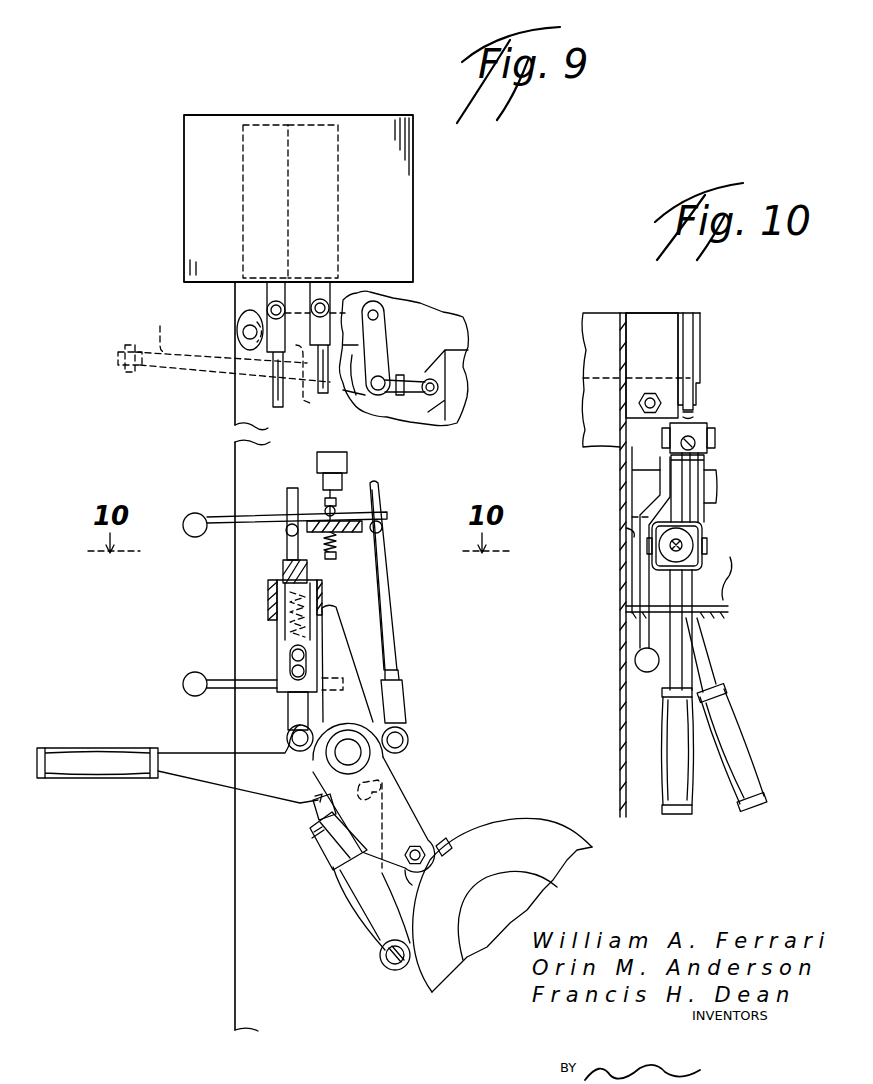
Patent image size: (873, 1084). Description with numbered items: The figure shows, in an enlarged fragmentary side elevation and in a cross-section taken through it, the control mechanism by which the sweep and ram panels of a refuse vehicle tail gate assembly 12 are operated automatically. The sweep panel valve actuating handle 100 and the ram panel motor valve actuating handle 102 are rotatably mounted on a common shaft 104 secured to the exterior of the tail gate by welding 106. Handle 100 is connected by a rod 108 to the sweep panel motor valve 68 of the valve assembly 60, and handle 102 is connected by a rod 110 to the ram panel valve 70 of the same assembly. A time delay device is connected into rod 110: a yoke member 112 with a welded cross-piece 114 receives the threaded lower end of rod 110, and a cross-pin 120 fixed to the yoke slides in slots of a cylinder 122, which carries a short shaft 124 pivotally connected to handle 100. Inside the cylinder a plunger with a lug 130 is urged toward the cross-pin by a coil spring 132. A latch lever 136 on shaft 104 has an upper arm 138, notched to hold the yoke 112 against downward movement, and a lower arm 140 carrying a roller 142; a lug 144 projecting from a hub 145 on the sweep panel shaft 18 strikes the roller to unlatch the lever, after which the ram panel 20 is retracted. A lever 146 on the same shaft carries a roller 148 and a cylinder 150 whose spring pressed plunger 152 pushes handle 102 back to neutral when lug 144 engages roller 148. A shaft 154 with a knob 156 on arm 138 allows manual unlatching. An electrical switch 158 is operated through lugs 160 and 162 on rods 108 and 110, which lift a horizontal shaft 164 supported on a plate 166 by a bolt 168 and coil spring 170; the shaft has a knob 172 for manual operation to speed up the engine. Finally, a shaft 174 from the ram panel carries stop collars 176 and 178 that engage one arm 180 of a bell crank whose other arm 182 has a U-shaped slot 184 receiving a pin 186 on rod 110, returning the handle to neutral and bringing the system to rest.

In FIG. 9, the tail gate assembly 12 is at (226, 922).
In FIG. 10, the tail gate assembly 12 is at (612, 685).
In FIG. 9, the sweep panel shaft 18 is at (545, 885).
In FIG. 10, the sweep panel shaft 18 is at (700, 335).
In FIG. 9, the ram panel 20 is at (470, 357).
In FIG. 9, the valve assembly 60 is at (424, 217).
In FIG. 9, the sweep panel motor valve 68 is at (243, 168).
In FIG. 9, the ram panel valve 70 is at (338, 175).
In FIG. 9, the sweep panel valve actuating handle 100 is at (287, 745).
In FIG. 10, the sweep panel valve actuating handle 100 is at (660, 728).
In FIG. 9, the ram panel motor valve actuating handle 102 is at (112, 782).
In FIG. 10, the ram panel motor valve actuating handle 102 is at (735, 730).
In FIG. 9, the common shaft 104 is at (343, 762).
In FIG. 10, the common shaft 104 is at (718, 485).
In FIG. 10, the welding 106 is at (632, 540).
In FIG. 9, the rod 108 is at (392, 640).
In FIG. 10, the rod 108 is at (710, 448).
In FIG. 9, the rod 110 is at (268, 385).
In FIG. 10, the rod 110 is at (670, 560).
In FIG. 9, the yoke member 112 is at (323, 595).
In FIG. 10, the yoke member 112 is at (732, 578).
In FIG. 9, the cross-piece 114 is at (322, 580).
In FIG. 10, the cross-piece 114 is at (690, 540).
In FIG. 9, the cross-pin 120 is at (306, 668).
In FIG. 9, the cylinder 122 is at (279, 635).
In FIG. 9, the short shaft 124 is at (290, 720).
In FIG. 9, the lug or projection 130 is at (340, 650).
In FIG. 9, the coil spring 132 is at (266, 603).
In FIG. 9, the latch lever 136 is at (330, 880).
In FIG. 9, the upper arm 138 is at (392, 602).
In FIG. 9, the lower arm 140 is at (345, 937).
In FIG. 9, the roller 142 is at (388, 970).
In FIG. 9, the lug 144 is at (440, 853).
In FIG. 9, the hub 145 is at (575, 857).
In FIG. 9, the lever 146 is at (407, 783).
In FIG. 9, the roller 148 is at (430, 886).
In FIG. 9, the cylinder 150 is at (312, 850).
In FIG. 9, the spring pressed plunger 152 is at (313, 812).
In FIG. 9, the shaft 154 is at (245, 668).
In FIG. 10, the shaft 154 is at (638, 598).
In FIG. 9, the knob 156 is at (182, 680).
In FIG. 10, the knob 156 is at (635, 657).
In FIG. 9, the electrical switch 158 is at (347, 458).
In FIG. 9, the lug 160 is at (383, 527).
In FIG. 9, the lug 162 is at (287, 538).
In FIG. 9, the shaft 164 is at (280, 512).
In FIG. 9, the plate 166 is at (362, 522).
In FIG. 9, the bolt 168 is at (340, 500).
In FIG. 9, the coil spring 170 is at (340, 542).
In FIG. 9, the knob 172 is at (193, 512).
In FIG. 9, the shaft 174 is at (161, 330).
In FIG. 9, the stop collar 176 is at (125, 345).
In FIG. 9, the stop collar 178 is at (400, 375).
In FIG. 9, the bell crank arm 180 is at (380, 412).
In FIG. 9, the bell crank arm 182 is at (313, 349).
In FIG. 9, the U-shaped slot 184 is at (248, 312).
In FIG. 9, the pin 186 is at (243, 332).